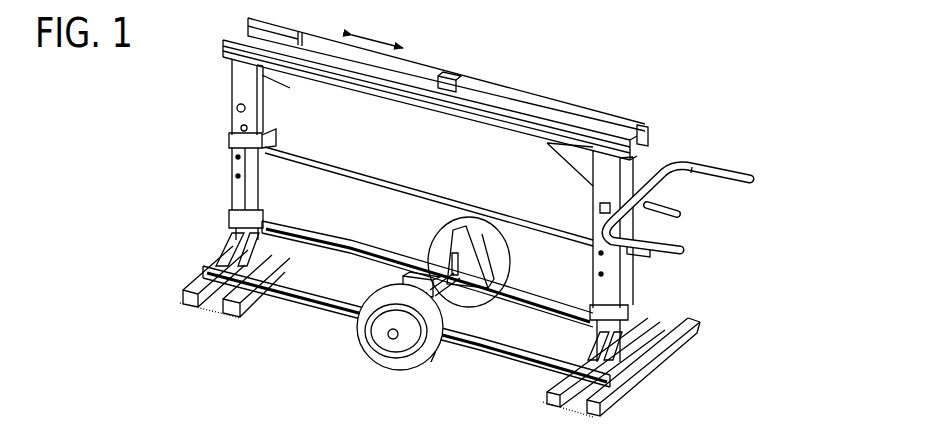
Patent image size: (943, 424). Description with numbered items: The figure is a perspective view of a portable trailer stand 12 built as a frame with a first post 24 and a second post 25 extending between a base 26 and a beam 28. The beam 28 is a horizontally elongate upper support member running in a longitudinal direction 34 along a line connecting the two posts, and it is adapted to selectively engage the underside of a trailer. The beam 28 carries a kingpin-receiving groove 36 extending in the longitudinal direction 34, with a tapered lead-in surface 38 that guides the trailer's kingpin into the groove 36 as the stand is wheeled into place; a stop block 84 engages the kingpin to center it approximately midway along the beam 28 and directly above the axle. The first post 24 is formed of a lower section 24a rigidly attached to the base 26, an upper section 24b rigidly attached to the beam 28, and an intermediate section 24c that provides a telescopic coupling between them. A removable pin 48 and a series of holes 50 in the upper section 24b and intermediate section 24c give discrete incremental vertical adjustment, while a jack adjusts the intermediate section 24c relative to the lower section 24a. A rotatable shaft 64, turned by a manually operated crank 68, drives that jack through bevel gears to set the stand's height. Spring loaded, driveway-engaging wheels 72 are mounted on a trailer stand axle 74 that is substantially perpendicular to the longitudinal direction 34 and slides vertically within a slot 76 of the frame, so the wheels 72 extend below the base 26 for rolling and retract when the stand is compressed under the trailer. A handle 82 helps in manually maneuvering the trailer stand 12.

The trailer stand 12 is at (690, 85).
The first post 24 is at (200, 188).
The lower section 24a is at (233, 227).
The upper section 24b is at (245, 80).
The intermediate section 24c is at (233, 168).
The second post 25 is at (627, 280).
The base 26 is at (643, 370).
The beam 28 is at (500, 86).
The longitudinal direction 34 is at (374, 34).
The kingpin-receiving groove 36 is at (541, 110).
The tapered lead-in surface 38 is at (270, 48).
The removable pin 48 is at (237, 108).
The holes 50 is at (241, 128).
The rotatable shaft 64 is at (433, 190).
The crank 68 is at (667, 204).
The wheels 72 is at (360, 338).
The trailer stand axle 74 is at (440, 298).
The slot 76 is at (450, 267).
The handle 82 is at (697, 162).
The stop block 84 is at (444, 76).